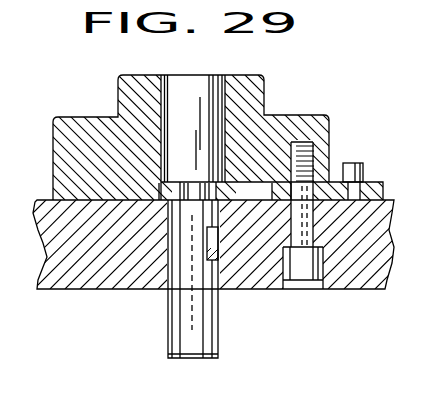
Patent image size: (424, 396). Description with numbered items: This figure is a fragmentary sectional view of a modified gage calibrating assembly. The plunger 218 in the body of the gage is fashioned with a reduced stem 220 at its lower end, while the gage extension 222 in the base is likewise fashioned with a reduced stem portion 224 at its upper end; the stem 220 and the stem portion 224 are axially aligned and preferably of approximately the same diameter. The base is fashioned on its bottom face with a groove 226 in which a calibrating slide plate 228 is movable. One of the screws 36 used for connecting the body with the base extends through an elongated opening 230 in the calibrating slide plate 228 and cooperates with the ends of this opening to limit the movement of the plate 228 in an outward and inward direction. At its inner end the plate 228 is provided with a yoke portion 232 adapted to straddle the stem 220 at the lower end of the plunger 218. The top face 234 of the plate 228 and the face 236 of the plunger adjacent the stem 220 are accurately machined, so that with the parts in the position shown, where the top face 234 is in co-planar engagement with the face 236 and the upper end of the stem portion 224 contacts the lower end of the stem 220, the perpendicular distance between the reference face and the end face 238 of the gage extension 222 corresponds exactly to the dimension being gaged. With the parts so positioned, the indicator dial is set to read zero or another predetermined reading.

The plunger 218 is at (187, 88).
The reduced stem 220 is at (186, 184).
The gage extension 222 is at (200, 333).
The reduced stem portion 224 is at (190, 213).
The groove 226 is at (282, 182).
The calibrating slide plate 228 is at (372, 182).
The elongated opening 230 is at (277, 193).
The yoke portion 232 is at (158, 194).
The top face 234 is at (231, 190).
The face 236 is at (160, 182).
The end face 238 is at (202, 357).
The screw 36 is at (310, 280).